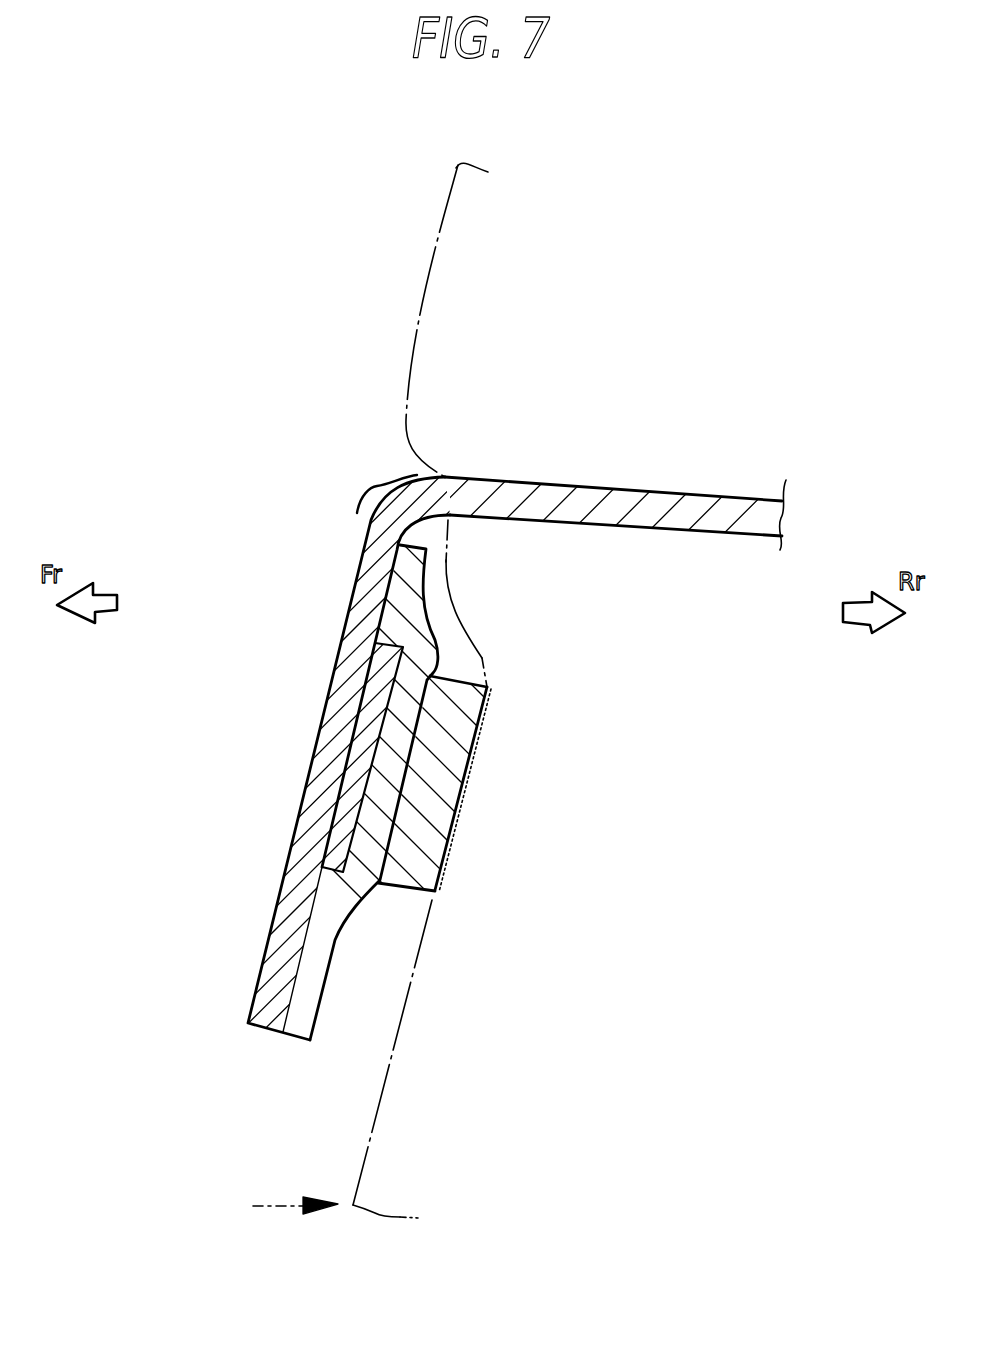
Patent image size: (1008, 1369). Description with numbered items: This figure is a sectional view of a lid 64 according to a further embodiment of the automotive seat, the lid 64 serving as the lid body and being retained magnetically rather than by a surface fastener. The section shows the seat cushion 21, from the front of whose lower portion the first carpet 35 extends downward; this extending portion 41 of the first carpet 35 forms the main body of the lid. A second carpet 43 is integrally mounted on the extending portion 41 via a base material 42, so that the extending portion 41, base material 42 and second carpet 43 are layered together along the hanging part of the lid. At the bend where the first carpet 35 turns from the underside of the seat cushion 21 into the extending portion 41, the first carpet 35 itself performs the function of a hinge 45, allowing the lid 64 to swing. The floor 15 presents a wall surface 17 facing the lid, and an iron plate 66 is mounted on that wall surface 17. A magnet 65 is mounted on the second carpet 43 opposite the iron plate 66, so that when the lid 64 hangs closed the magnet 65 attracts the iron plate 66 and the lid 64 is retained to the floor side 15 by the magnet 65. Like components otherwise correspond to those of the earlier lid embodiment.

The floor 15 is at (253, 1206).
The wall surface 17 is at (367, 1157).
The seat cushion 21 is at (418, 327).
The first carpet 35 is at (445, 441).
The extending portion 41 is at (262, 960).
The base material 42 is at (403, 637).
The second carpet 43 is at (447, 573).
The hinge 45 is at (375, 486).
The lid 64 is at (285, 508).
The magnet 65 is at (427, 913).
The iron plate 66 is at (452, 842).